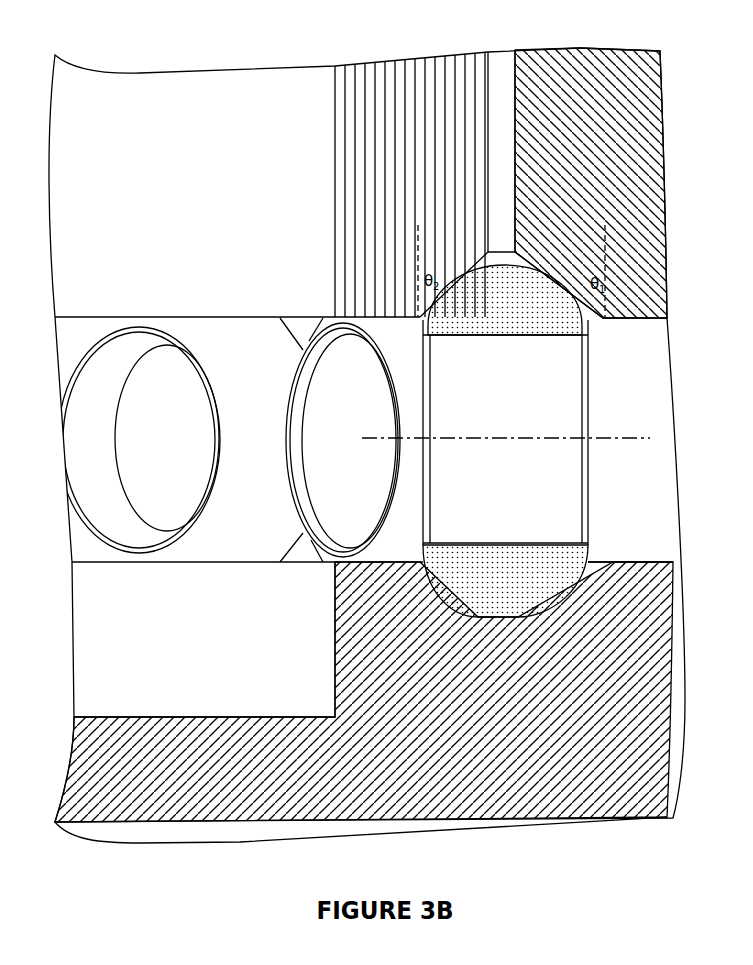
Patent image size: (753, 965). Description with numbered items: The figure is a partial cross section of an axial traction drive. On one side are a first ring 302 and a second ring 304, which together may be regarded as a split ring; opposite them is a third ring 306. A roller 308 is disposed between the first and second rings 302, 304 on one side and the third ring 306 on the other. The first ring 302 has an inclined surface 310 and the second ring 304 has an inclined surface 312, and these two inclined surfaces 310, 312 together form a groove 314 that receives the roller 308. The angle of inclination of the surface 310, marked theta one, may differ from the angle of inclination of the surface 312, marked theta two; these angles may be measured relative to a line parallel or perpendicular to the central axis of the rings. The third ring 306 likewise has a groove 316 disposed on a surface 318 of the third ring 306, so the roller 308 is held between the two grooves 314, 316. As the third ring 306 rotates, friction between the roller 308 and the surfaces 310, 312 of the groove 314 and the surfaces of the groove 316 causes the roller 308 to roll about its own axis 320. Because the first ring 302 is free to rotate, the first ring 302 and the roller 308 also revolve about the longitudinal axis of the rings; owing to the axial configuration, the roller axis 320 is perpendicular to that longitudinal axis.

The first ring 302 is at (583, 65).
The second ring 304 is at (405, 72).
The third ring 306 is at (645, 570).
The roller 308 is at (583, 402).
The inclined surface 310 is at (591, 323).
The inclined surface 312 is at (422, 323).
The groove 314 is at (483, 252).
The groove 316 is at (474, 621).
The surface 318 is at (622, 555).
The axis 320 is at (371, 438).